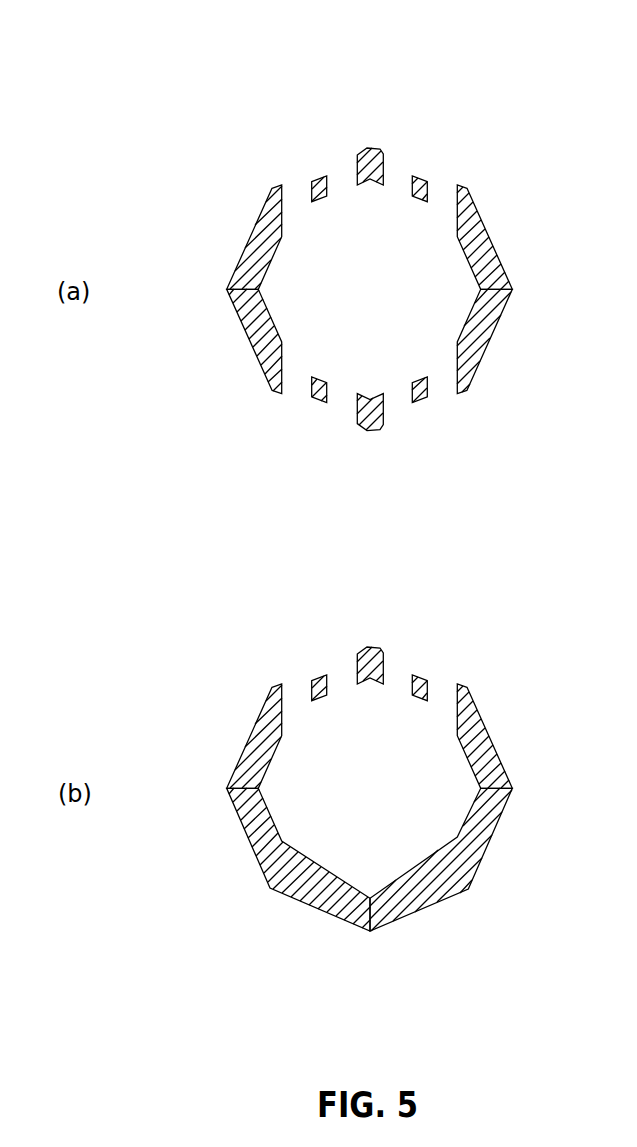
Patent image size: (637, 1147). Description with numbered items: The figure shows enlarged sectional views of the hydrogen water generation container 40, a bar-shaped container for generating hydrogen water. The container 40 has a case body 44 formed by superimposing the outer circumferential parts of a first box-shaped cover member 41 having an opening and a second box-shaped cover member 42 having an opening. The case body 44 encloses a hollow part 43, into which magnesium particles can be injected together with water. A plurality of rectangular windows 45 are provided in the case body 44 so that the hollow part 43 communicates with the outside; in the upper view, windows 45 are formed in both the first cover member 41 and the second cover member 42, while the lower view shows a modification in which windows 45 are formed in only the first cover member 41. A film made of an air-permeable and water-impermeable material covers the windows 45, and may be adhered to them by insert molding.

The hydrogen water generation container 40 is at (125, 91).
The first box-shaped cover member 41 is at (262, 247).
The second box-shaped cover member 42 is at (258, 337).
The hollow part 43 is at (359, 263).
The case body 44 is at (488, 150).
The rectangular windows 45 is at (342, 160).